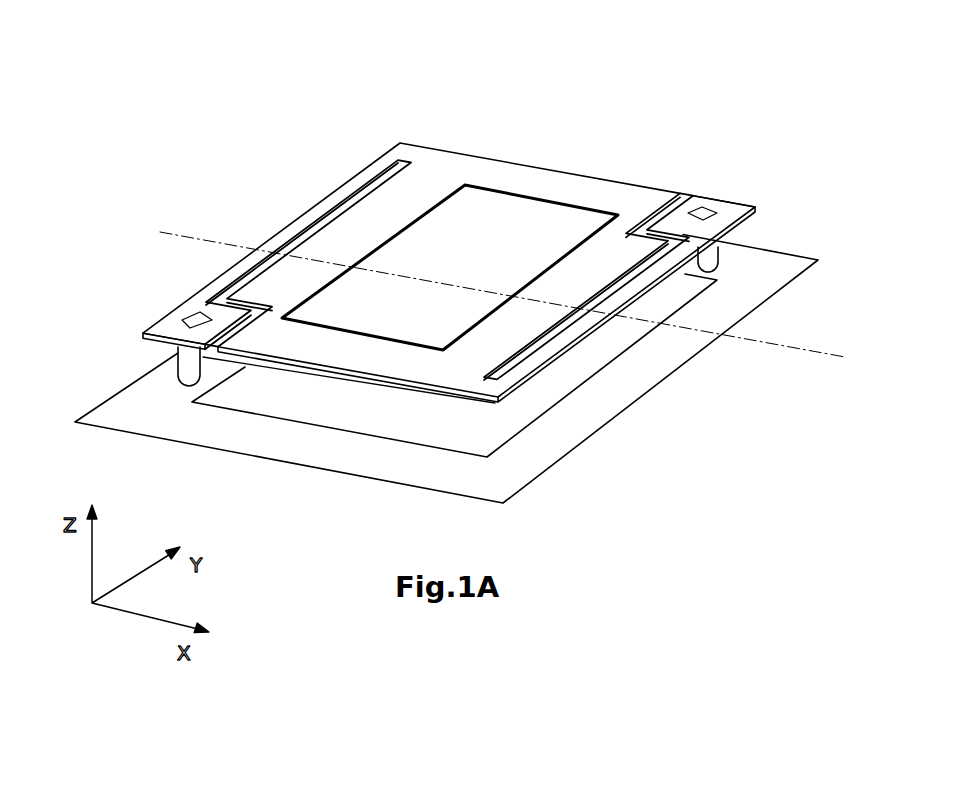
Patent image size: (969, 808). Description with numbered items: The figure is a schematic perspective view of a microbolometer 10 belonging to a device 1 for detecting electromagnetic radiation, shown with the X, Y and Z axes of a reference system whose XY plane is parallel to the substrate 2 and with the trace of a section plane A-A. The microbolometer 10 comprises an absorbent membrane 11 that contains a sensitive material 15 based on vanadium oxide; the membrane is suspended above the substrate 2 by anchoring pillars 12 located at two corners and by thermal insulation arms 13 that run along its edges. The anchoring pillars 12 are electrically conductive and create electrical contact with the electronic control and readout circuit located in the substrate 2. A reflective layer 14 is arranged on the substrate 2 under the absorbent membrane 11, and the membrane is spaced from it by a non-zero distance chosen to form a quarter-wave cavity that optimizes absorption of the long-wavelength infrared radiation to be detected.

The device for detecting electromagnetic radiation 1 is at (180, 66).
The substrate 2 is at (792, 284).
The microbolometer 10 is at (190, 147).
The absorbent membrane 11 is at (628, 178).
The anchoring pillars 12 is at (178, 360).
The thermal insulation arms 13 is at (213, 279).
The reflective layer 14 is at (594, 382).
The sensitive material 15 is at (504, 191).